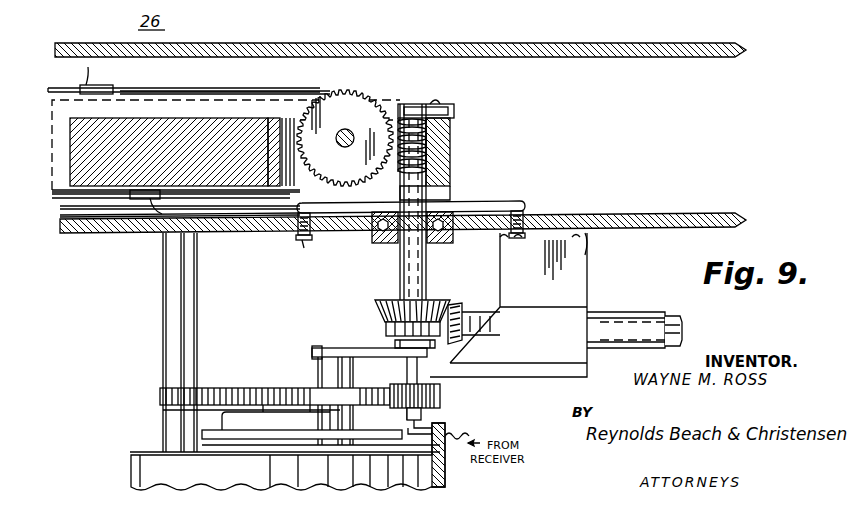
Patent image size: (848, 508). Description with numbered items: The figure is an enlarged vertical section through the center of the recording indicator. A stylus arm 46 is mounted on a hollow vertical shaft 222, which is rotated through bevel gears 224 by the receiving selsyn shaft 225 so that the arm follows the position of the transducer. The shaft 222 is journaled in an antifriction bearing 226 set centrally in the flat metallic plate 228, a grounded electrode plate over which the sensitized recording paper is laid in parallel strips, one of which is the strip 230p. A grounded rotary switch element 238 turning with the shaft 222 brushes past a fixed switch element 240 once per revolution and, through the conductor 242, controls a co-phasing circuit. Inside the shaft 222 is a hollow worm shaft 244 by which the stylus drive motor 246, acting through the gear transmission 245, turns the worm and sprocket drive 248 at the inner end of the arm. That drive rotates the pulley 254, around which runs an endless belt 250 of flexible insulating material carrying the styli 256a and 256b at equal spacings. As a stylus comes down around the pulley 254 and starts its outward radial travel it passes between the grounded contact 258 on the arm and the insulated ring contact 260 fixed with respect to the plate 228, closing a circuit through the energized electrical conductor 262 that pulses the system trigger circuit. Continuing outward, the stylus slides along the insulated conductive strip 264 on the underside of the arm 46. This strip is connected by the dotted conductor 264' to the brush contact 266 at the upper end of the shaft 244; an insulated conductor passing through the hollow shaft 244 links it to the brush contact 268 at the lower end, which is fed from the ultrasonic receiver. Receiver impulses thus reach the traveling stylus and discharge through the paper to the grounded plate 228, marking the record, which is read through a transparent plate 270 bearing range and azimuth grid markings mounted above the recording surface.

The transparent plate 270 is at (541, 41).
The stylus 256b is at (113, 86).
The stylus arm 46 is at (166, 114).
The endless belt 250 is at (268, 90).
The conductor 264' is at (226, 145).
The pulley 254 is at (332, 92).
The grounded contact 258 is at (303, 184).
The worm and sprocket drive 248 is at (404, 108).
The brush contact 266 is at (437, 102).
The worm shaft 244 is at (443, 173).
The insulated ring contact 260 is at (471, 202).
The sensitized recording paper strip 230p is at (605, 213).
The flat metallic plate 228 is at (747, 220).
The insulated conductive strip 264 is at (176, 226).
The stylus 256a is at (145, 210).
The energized electrical conductor 262 is at (262, 255).
The antifriction bearing 226 is at (376, 244).
The vertical shaft 222 is at (426, 278).
The bevel gears 224 is at (452, 312).
The grounded rotary switch element 238 is at (444, 350).
The receiving selsyn shaft 225 is at (667, 312).
The fixed switch element 240 is at (364, 348).
The conductor 242 is at (282, 350).
The gear transmission 245 is at (380, 408).
The brush contact 268 is at (432, 421).
The stylus drive motor 246 is at (155, 458).